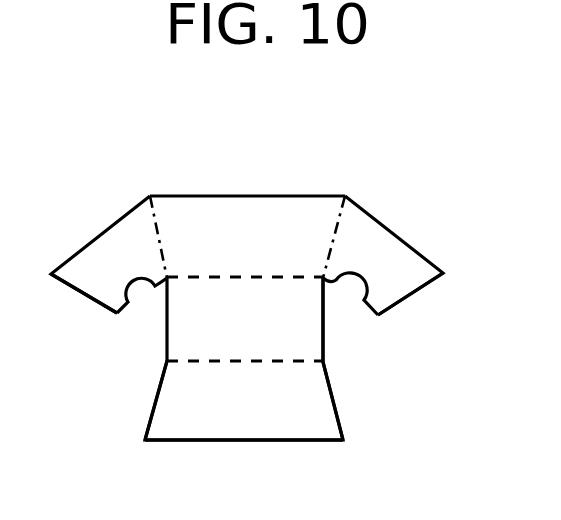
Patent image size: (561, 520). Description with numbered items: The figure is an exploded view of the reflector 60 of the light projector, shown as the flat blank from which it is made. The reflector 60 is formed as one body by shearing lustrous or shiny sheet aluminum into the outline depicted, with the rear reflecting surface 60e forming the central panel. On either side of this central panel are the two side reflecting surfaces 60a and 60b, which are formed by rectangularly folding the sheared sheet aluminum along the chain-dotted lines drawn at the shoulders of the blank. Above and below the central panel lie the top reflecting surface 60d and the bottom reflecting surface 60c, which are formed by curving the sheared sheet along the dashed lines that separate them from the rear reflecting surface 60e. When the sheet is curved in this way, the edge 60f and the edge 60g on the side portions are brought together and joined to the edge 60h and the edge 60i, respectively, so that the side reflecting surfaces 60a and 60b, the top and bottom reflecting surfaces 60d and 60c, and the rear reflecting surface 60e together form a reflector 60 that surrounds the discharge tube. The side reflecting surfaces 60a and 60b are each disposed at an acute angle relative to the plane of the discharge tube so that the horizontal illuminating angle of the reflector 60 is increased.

The reflector 60 is at (272, 452).
The side reflecting surface 60a is at (388, 250).
The side reflecting surface 60b is at (107, 250).
The bottom reflecting surface 60c is at (203, 428).
The top reflecting surface 60d is at (250, 217).
The rear reflecting surface 60e is at (312, 320).
The edge 60f is at (423, 293).
The edge 60g is at (80, 303).
The edge 60h is at (337, 395).
The edge 60i is at (152, 397).